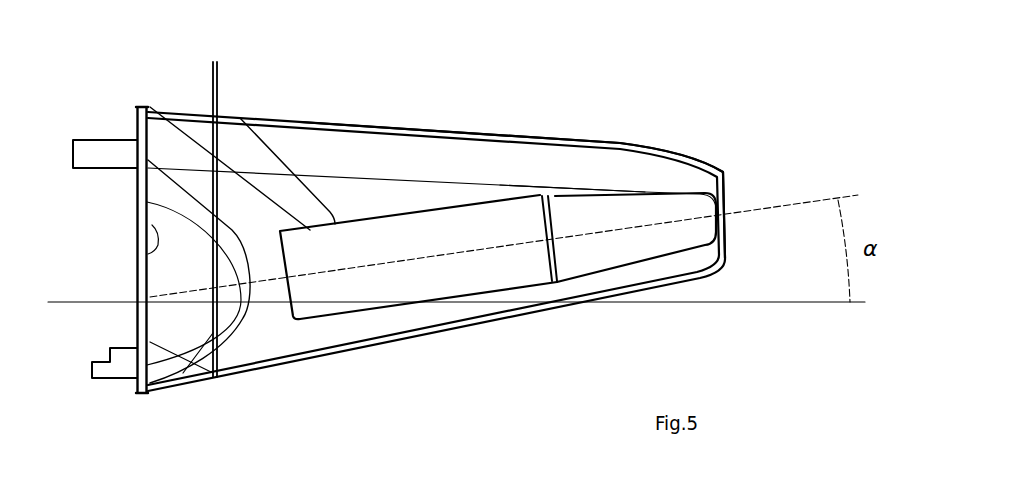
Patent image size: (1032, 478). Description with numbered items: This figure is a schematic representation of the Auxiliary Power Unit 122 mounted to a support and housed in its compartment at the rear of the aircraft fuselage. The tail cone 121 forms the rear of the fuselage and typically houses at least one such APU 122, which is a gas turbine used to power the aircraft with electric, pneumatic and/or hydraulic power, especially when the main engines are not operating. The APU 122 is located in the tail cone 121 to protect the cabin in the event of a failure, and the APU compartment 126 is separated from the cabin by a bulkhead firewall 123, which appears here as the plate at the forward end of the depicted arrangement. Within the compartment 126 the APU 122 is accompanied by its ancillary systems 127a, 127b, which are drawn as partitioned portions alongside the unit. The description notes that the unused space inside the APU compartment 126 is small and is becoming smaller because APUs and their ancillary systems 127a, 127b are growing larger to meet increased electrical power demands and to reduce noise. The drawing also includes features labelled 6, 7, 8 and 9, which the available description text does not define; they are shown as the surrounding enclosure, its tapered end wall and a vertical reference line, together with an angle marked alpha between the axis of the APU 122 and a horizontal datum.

The end plate 6 is at (163, 127).
The housing 7 is at (367, 155).
The end wall 8 is at (633, 170).
The reference plane 9 is at (215, 207).
The tail cone 121 is at (457, 132).
The Auxiliary Power Unit 122 is at (367, 287).
The bulkhead firewall 123 is at (152, 225).
The APU compartment 126 is at (533, 155).
The ancillary system 127a is at (243, 153).
The ancillary system 127b is at (657, 200).